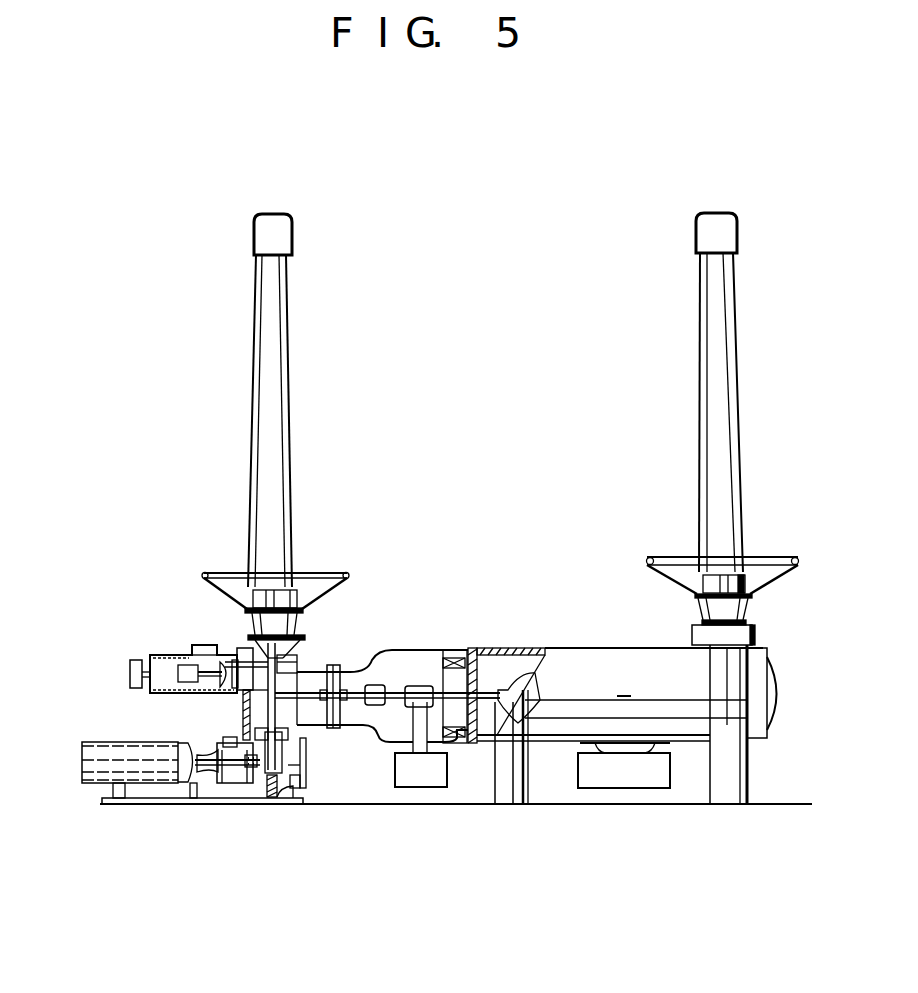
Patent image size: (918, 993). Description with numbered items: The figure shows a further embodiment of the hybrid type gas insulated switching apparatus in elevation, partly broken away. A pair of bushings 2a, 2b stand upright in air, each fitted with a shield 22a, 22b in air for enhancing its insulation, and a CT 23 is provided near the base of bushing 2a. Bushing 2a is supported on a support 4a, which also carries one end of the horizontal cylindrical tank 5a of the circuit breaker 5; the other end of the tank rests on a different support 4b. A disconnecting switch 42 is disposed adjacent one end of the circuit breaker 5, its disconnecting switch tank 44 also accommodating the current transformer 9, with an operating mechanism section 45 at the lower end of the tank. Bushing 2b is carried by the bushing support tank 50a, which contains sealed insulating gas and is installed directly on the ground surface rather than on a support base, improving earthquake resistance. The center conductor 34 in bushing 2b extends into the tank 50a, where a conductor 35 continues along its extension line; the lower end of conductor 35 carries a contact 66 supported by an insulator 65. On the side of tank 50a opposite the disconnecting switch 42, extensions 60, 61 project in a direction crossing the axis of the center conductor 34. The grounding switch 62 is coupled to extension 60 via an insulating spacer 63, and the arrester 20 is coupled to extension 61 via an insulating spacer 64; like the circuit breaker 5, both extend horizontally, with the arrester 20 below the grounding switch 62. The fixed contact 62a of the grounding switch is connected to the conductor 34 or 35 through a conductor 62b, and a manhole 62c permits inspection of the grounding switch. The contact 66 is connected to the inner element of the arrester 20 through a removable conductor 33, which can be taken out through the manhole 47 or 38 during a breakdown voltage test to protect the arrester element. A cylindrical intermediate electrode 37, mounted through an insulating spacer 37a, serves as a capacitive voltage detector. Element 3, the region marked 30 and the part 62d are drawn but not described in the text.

The bushing 2a is at (738, 429).
The bushing 2b is at (291, 432).
The vertical drive shaft 3 is at (281, 706).
The support 4a is at (738, 783).
The support 4b is at (515, 783).
The circuit breaker 5 is at (627, 718).
The cylindrical tank 5a is at (627, 657).
The current transformer 9 is at (470, 650).
The lightning arrester 20 is at (128, 743).
The shield 22a is at (800, 547).
The shield 22b is at (346, 573).
The CT 23 is at (756, 633).
The gear housing 30 is at (358, 672).
The removable conductor 33 is at (253, 768).
The center conductor 34 is at (299, 650).
The conductor 35 is at (328, 727).
The cylindrical intermediate electrode 37 is at (306, 742).
The insulating spacer 37a is at (230, 770).
The manhole 38 is at (306, 783).
The disconnecting switch 42 is at (456, 645).
The disconnecting switch tank 44 is at (416, 652).
The operating mechanism section 45 is at (447, 778).
The manhole 47 is at (225, 738).
The bushing support tank 50a is at (299, 664).
The extension 60 is at (243, 652).
The extension 61 is at (240, 778).
The grounding switch 62 is at (160, 657).
The fixed contact 62a is at (162, 655).
The conductor 62b is at (200, 693).
The manhole 62c is at (198, 645).
The hand wheel 62d is at (130, 672).
The insulating spacer 63 is at (228, 688).
The insulating spacer 64 is at (213, 768).
The insulator 65 is at (286, 797).
The contact 66 is at (306, 765).